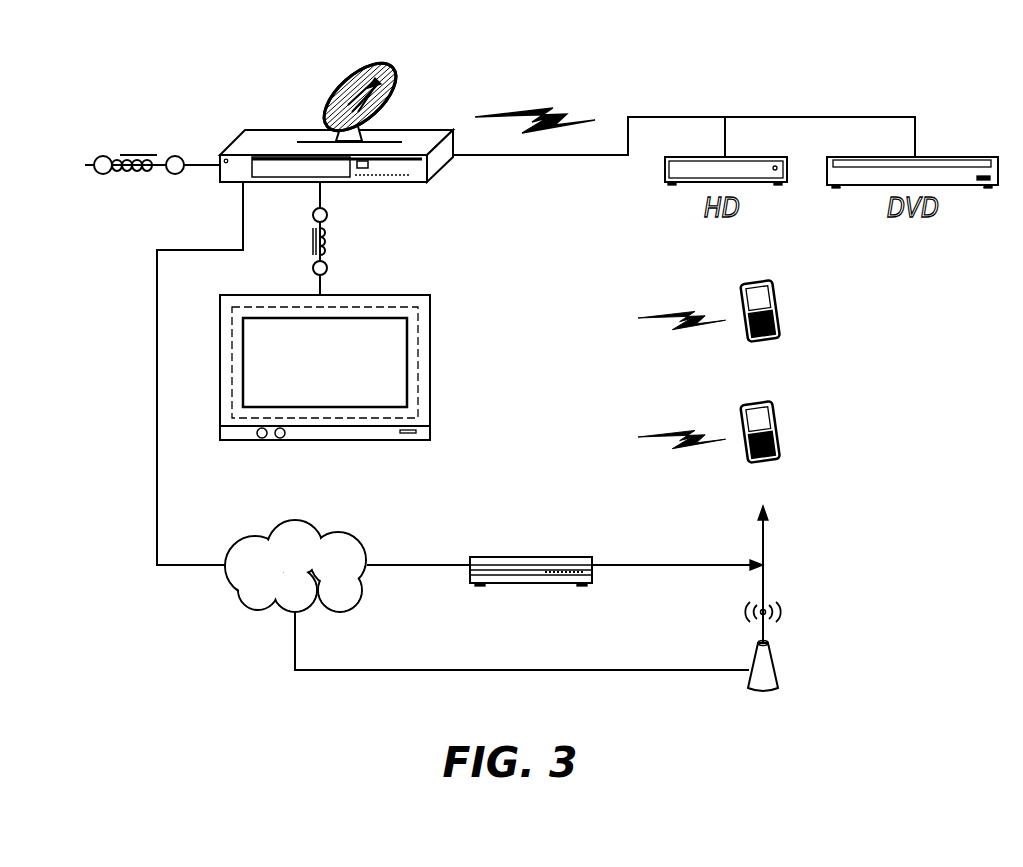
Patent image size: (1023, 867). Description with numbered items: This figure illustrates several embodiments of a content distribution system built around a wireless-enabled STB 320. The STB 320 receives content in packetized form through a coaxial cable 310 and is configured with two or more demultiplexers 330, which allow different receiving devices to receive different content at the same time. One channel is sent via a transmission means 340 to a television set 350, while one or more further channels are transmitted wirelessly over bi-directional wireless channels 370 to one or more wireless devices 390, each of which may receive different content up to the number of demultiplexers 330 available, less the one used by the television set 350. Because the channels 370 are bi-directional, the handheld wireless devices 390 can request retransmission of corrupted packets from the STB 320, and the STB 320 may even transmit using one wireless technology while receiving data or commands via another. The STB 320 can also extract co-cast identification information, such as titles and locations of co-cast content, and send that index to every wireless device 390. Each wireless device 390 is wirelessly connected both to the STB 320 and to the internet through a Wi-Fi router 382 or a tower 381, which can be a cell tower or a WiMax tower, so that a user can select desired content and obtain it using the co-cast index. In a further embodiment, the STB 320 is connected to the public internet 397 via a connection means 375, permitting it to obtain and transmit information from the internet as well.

The coaxial cable 310 is at (140, 155).
The STB 320 is at (290, 130).
The demultiplexers 330 is at (363, 172).
The transmission means 340 is at (315, 235).
The television set 350 is at (430, 333).
The bi-directional wireless channels 370 is at (563, 118).
The connection means 375 is at (157, 502).
The tower 381 is at (782, 670).
The Wi-Fi router 382 is at (517, 557).
The wireless devices 390 is at (781, 312).
The public internet 397 is at (295, 566).